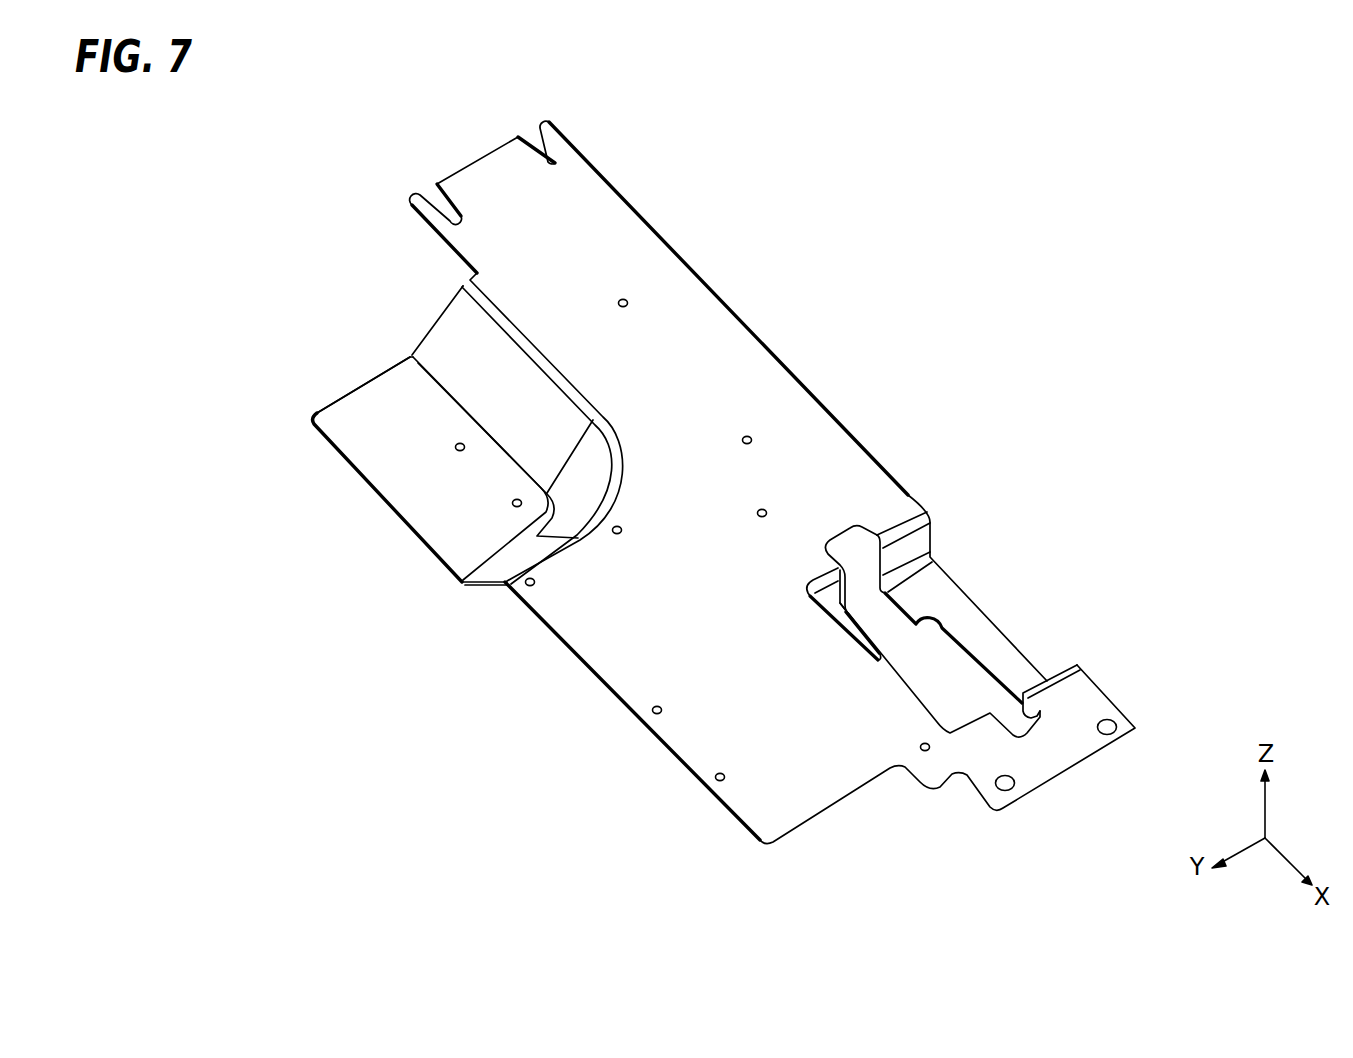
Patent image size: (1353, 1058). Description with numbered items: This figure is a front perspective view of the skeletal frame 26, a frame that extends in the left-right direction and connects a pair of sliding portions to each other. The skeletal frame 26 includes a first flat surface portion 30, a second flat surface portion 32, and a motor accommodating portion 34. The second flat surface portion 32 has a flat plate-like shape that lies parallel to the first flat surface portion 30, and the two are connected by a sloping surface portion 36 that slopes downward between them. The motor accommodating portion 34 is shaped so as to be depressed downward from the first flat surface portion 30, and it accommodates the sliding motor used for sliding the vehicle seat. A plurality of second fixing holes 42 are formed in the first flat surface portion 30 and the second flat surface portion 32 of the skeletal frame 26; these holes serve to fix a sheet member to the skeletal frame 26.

The skeletal frame 26 is at (389, 176).
The first flat surface portion 30 is at (590, 202).
The second flat surface portion 32 is at (327, 420).
The motor accommodating portion 34 is at (920, 540).
The sloping surface portion 36 is at (461, 358).
The second fixing holes 42 is at (630, 303).